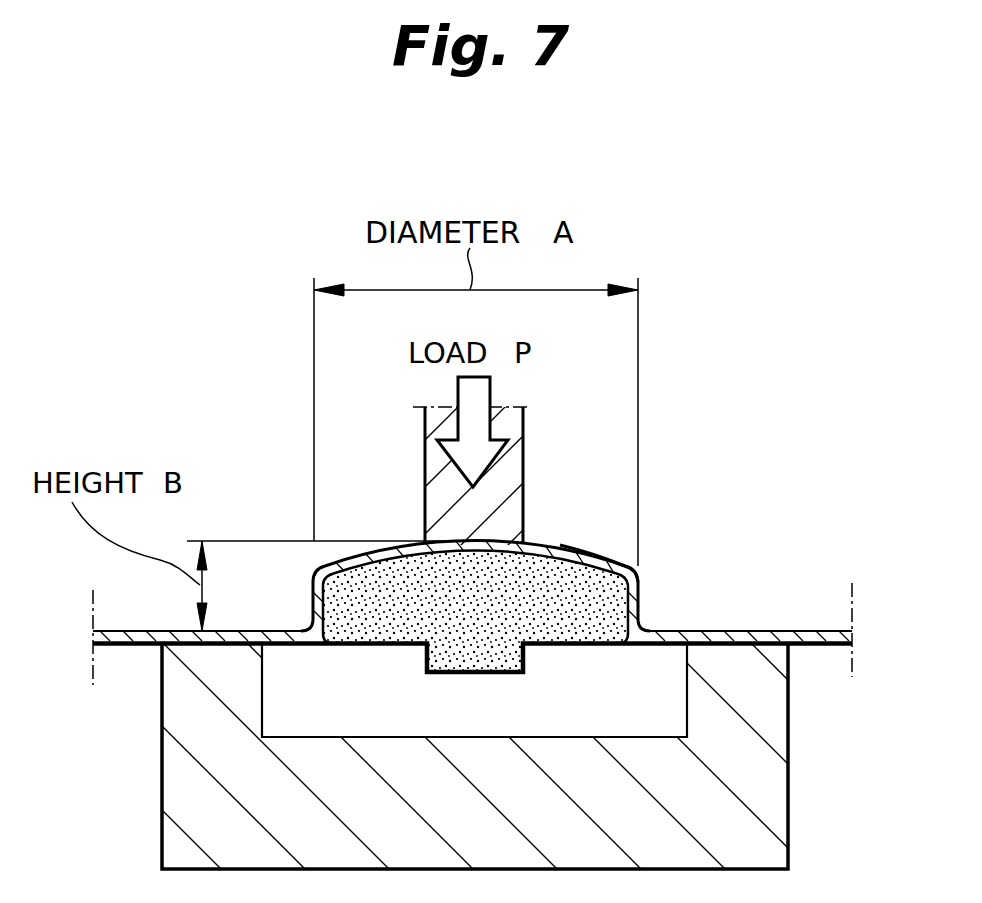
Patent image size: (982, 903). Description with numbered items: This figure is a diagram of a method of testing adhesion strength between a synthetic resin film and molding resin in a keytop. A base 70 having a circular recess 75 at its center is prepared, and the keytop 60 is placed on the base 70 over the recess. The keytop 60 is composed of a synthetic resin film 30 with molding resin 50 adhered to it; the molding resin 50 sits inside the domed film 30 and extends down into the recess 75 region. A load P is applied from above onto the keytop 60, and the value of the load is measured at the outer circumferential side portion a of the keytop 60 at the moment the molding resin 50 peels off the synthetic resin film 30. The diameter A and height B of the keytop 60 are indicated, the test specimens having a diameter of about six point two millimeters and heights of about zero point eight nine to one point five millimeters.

The synthetic resin film 30 is at (560, 545).
The molding resin 50 is at (597, 622).
The keytop 60 is at (600, 556).
The base 70 is at (180, 793).
The recess 75 is at (287, 700).
The outer circumferential side portion a is at (310, 590).